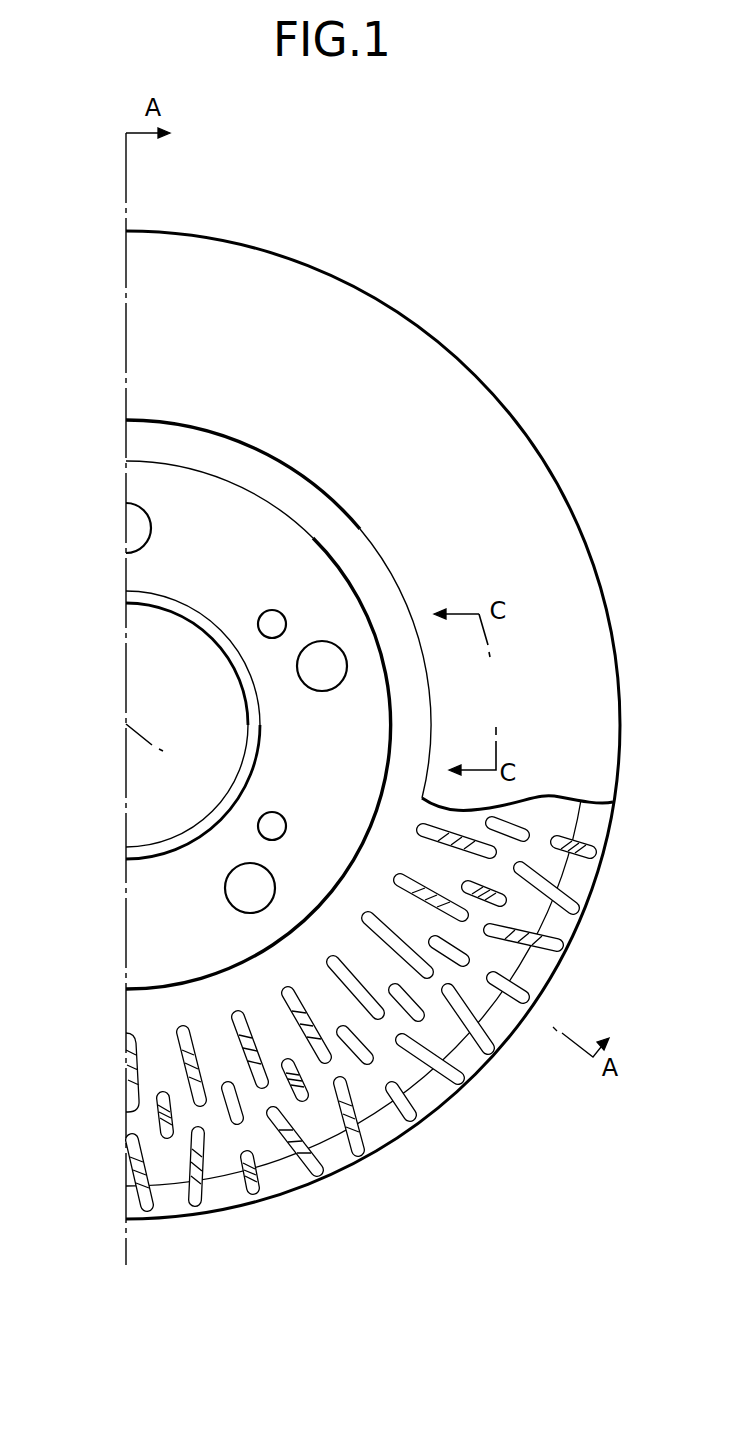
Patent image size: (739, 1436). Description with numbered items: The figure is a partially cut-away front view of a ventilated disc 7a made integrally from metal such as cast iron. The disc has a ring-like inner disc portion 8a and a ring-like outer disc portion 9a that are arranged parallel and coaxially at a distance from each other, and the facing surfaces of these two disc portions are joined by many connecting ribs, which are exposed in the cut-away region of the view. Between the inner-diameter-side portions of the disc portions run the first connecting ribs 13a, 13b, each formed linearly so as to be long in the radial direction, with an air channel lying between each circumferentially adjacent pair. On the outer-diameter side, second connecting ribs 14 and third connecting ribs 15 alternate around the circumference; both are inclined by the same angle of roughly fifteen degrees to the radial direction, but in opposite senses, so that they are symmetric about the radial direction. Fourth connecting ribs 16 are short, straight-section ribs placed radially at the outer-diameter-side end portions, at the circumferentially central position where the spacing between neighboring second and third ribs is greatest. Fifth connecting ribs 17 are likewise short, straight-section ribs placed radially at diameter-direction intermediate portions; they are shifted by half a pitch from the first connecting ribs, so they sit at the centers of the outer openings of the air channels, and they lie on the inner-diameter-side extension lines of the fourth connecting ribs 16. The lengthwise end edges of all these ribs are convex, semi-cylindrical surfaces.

The ventilated disc 7a is at (538, 338).
The inner disc portion 8a is at (583, 877).
The outer disc portion 9a is at (563, 530).
The first connecting rib 13a is at (185, 1038).
The first connecting rib 13b is at (235, 1025).
The second connecting rib 14 is at (585, 913).
The third connecting rib 15 is at (563, 958).
The fourth connecting rib 16 is at (590, 848).
The fifth connecting rib 17 is at (520, 832).